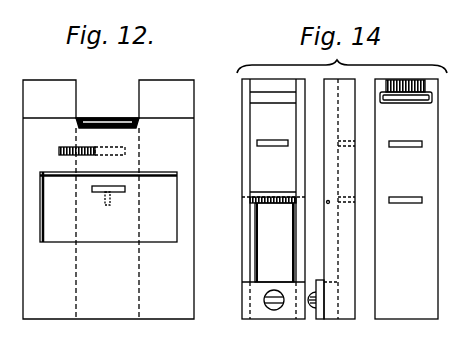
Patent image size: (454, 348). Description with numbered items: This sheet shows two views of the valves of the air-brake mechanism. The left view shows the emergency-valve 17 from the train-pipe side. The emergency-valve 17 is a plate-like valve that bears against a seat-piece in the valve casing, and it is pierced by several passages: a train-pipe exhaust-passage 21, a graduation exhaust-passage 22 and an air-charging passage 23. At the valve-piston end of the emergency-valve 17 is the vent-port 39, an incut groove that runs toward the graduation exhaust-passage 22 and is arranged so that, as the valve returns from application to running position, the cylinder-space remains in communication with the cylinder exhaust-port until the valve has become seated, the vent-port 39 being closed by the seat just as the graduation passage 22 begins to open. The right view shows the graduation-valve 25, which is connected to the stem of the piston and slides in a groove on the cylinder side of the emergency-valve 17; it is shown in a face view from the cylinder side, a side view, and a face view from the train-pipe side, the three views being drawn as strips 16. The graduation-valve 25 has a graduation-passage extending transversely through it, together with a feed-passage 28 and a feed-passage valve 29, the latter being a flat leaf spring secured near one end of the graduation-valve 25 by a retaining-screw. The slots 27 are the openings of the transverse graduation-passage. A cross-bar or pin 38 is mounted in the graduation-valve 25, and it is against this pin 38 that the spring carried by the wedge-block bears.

In FIG. 14, the strip member 16 is at (340, 210).
In FIG. 12, the emergency-valve 17 is at (108, 199).
In FIG. 12, the train-pipe exhaust-passage 21 is at (125, 189).
In FIG. 12, the graduation exhaust-passage 22 is at (125, 150).
In FIG. 12, the air-charging passage 23 is at (108, 207).
In FIG. 14, the graduation-valve 25 is at (265, 92).
In FIG. 14, the slot 27 is at (277, 135).
In FIG. 14, the feed-passage 28 is at (405, 188).
In FIG. 14, the feed-passage valve 29 is at (274, 242).
In FIG. 14, the cross-bar or pin 38 is at (258, 202).
In FIG. 12, the vent-port 39 is at (102, 121).